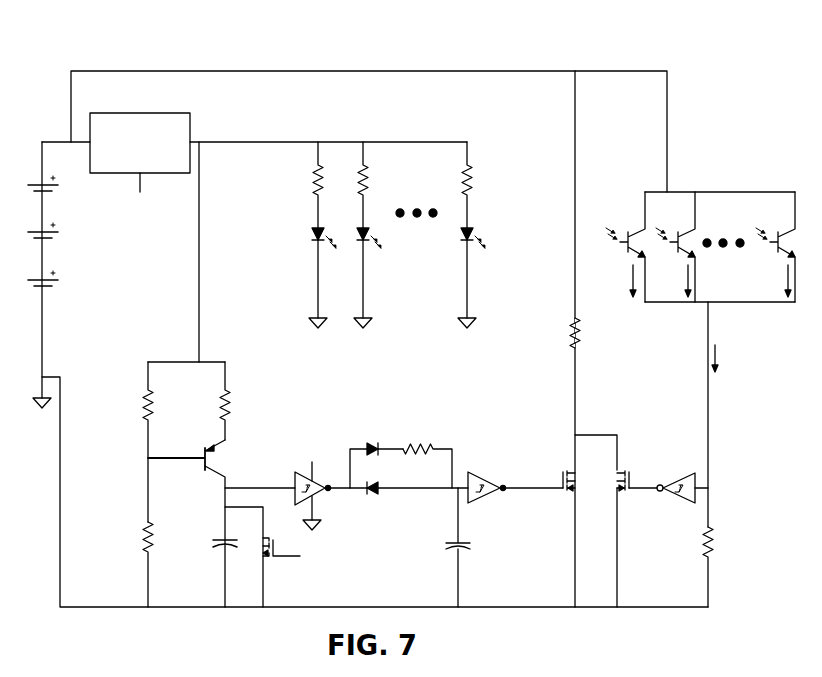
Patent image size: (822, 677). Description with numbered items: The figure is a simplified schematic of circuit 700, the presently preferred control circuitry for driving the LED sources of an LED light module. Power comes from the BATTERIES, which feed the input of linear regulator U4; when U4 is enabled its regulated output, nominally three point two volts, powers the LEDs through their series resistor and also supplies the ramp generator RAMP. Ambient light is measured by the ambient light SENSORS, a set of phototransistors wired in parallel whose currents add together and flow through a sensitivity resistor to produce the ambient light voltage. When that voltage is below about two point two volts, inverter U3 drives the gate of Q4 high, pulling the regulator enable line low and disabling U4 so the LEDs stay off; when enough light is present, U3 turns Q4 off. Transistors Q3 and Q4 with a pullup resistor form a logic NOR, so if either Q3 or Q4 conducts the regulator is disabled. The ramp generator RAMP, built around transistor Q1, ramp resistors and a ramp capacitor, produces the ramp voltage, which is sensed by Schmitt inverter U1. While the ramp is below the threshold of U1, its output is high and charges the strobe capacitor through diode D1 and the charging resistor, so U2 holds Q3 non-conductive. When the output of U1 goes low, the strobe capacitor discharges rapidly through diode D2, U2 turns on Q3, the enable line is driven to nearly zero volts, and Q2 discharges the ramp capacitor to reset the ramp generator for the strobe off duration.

The circuit 700 is at (73, 58).
The linear regulator U4 is at (210, 186).
The batteries BATTERIES is at (105, 231).
The ambient light sensors SENSORS is at (699, 200).
The ramp generator circuit RAMP is at (228, 455).
The PNP transistor Q1 is at (186, 516).
The transistor Q2 is at (262, 557).
The Schmitt inverter U1 is at (298, 484).
The diode D1 is at (376, 456).
The diode D2 is at (370, 478).
The Schmitt inverter U2 is at (487, 494).
The transistor Q3 is at (560, 493).
The transistor Q4 is at (630, 539).
The inverter U3 is at (682, 498).